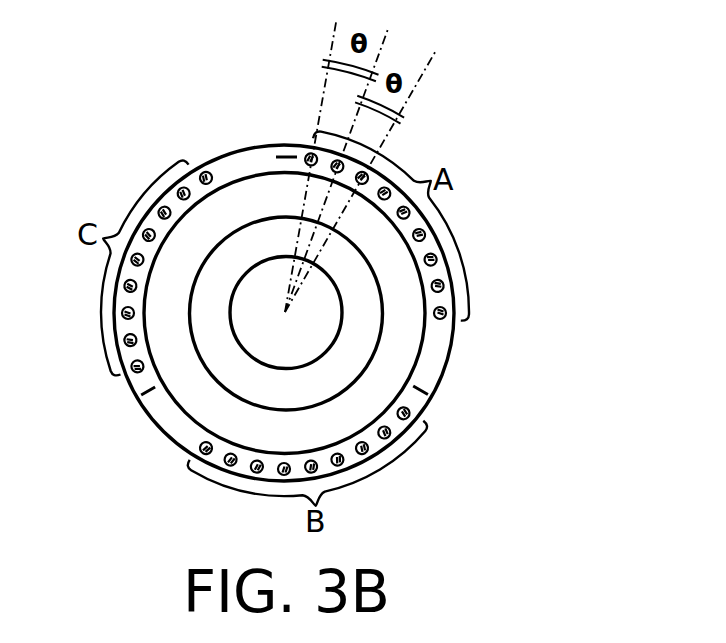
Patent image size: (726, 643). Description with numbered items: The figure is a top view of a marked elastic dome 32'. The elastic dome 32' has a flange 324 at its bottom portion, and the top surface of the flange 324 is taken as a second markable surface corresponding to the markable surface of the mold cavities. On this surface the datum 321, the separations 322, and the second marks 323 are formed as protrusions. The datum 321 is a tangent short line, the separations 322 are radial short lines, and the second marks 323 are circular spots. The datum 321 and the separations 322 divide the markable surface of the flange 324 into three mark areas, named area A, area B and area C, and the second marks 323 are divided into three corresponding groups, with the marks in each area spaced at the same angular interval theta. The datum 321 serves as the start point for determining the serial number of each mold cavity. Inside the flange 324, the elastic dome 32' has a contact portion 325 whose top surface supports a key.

The elastic dome 32' is at (263, 290).
The datum 321 is at (276, 156).
The separations 322 is at (418, 388).
The second marks 323 is at (446, 318).
The flange 324 is at (432, 363).
The contact portion 325 is at (220, 358).